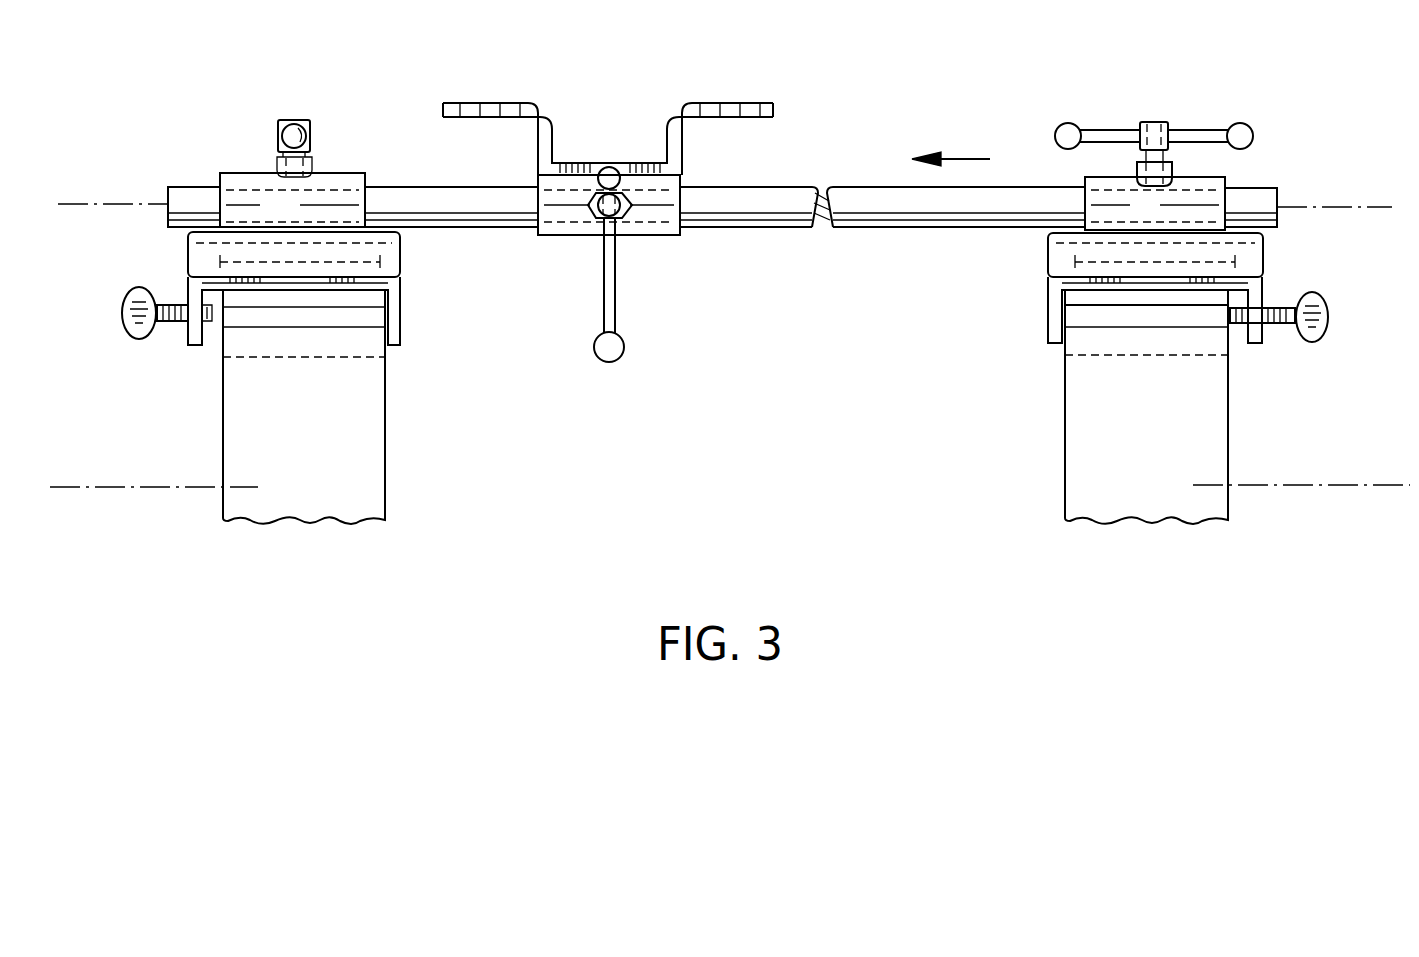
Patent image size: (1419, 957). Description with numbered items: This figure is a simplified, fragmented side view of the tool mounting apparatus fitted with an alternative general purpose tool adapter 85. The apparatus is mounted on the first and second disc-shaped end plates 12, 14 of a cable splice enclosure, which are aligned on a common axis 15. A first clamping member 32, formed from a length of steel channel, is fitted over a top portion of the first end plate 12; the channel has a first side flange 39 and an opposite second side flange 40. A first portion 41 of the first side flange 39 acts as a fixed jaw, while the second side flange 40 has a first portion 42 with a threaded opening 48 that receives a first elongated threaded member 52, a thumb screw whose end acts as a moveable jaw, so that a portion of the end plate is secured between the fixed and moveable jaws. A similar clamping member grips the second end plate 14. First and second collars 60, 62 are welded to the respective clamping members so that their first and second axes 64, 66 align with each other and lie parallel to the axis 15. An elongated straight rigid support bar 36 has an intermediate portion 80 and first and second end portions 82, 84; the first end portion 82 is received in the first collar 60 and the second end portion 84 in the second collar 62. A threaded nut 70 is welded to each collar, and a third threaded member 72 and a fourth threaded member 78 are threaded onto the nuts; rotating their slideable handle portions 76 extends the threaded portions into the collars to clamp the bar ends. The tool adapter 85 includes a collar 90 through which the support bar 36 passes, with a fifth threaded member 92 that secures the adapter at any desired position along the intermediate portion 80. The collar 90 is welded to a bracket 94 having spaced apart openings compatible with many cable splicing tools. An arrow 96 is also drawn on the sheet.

The first end plate 12 is at (1205, 443).
The second end plate 14 is at (240, 427).
The axis 15 is at (82, 487).
The first clamping member 32 is at (1265, 246).
The support bar 36 is at (870, 205).
The first side flange 39 is at (1038, 340).
The second side flange 40 is at (1255, 352).
The first portion of first side flange 41 is at (1048, 310).
The first portion of second flange 42 is at (1265, 291).
The threaded opening 48 is at (1262, 333).
The first elongated threaded member 52 is at (1330, 318).
The first collar 60 is at (1215, 176).
The second collar 62 is at (345, 175).
The first axis 64 is at (1352, 205).
The second axis 66 is at (76, 204).
The threaded nut 70 is at (1136, 170).
The third threaded member 72 is at (1152, 122).
The handle portion 76 is at (280, 136).
The fourth threaded member 78 is at (290, 120).
The intermediate portion 80 is at (735, 187).
The first end portion 82 is at (1250, 188).
The second end portion 84 is at (190, 186).
The general purpose tool adapter 85 is at (607, 110).
The collar 90 is at (662, 215).
The fifth threaded member 92 is at (597, 220).
The bracket 94 is at (672, 103).
The direction arrow 96 is at (958, 159).